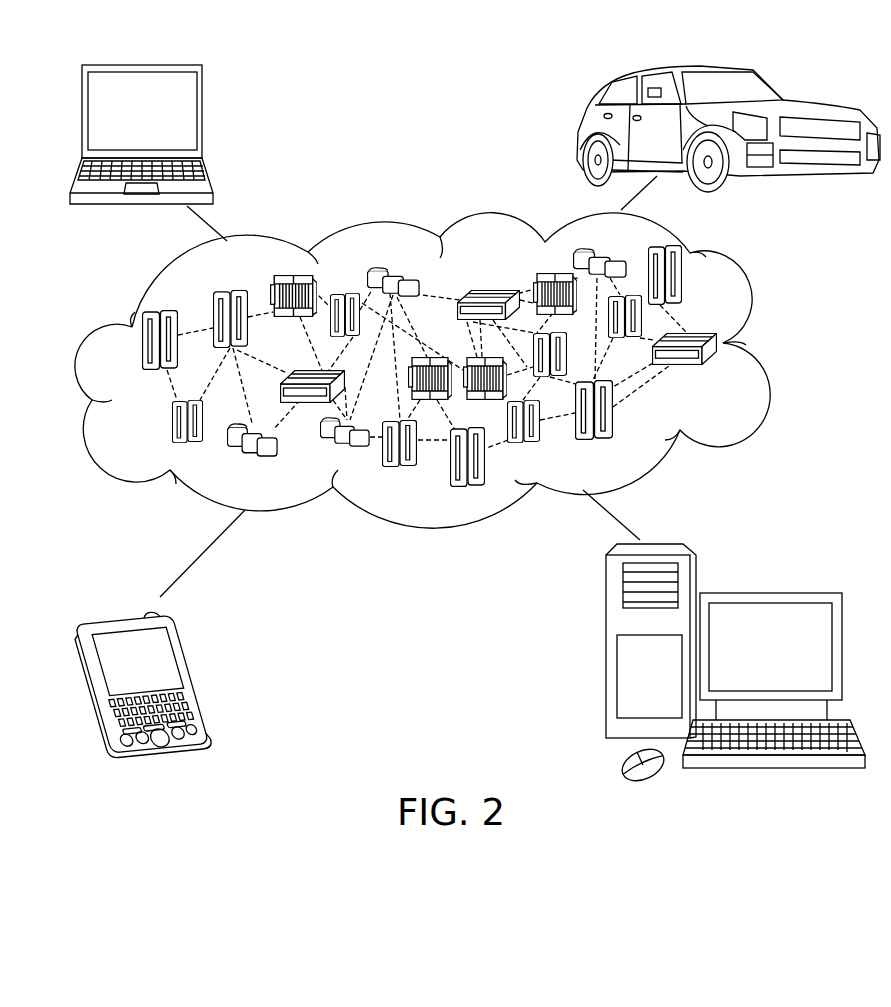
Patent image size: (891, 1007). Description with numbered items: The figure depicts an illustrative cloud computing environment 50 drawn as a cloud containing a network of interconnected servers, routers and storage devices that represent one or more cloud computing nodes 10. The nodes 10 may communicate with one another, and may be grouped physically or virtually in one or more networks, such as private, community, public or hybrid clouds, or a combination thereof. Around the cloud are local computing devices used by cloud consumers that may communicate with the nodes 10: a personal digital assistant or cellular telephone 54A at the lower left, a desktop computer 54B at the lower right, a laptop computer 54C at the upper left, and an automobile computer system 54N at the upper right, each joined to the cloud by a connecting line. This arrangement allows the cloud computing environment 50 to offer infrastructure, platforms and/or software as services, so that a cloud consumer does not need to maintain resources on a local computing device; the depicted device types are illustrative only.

The cloud computing nodes 10 is at (727, 376).
The cloud computing environment 50 is at (766, 347).
The personal digital assistant or cellular telephone 54A is at (193, 673).
The desktop computer 54B is at (768, 592).
The laptop computer 54C is at (203, 114).
The automobile computer system 54N is at (580, 130).